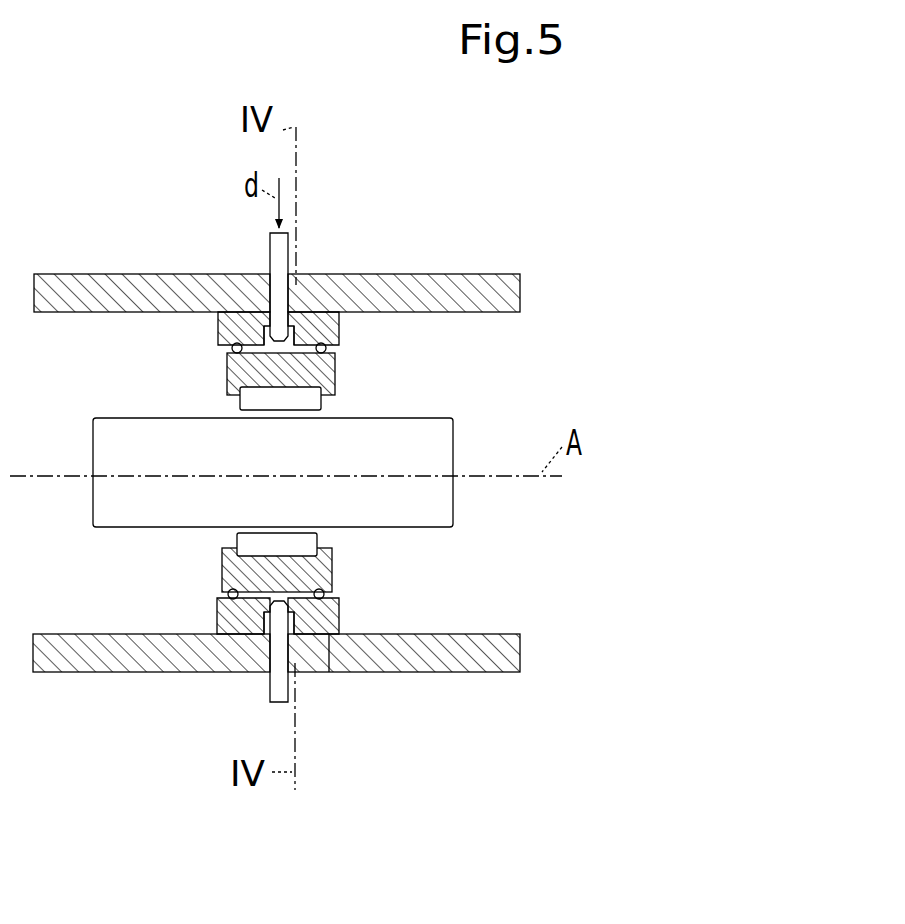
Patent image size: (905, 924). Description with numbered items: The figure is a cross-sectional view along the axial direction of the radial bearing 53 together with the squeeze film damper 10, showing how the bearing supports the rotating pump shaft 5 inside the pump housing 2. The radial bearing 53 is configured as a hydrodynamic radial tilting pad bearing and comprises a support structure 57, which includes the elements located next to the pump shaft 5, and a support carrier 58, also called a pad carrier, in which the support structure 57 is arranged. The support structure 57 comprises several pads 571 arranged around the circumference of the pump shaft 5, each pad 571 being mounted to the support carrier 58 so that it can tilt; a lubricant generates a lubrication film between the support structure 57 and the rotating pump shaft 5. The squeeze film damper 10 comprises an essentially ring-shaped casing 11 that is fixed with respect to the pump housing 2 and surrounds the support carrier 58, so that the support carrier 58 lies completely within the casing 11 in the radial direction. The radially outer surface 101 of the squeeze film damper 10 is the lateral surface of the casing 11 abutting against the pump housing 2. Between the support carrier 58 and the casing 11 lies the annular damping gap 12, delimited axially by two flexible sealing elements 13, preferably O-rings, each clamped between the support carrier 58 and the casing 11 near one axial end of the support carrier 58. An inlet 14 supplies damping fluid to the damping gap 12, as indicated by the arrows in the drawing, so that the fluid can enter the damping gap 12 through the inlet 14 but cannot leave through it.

The pump housing 2 is at (440, 270).
The pump shaft 5 is at (458, 500).
The squeeze film damper 10 is at (215, 344).
The casing 11 is at (341, 618).
The damping gap 12 is at (286, 332).
The sealing elements 13 is at (222, 597).
The inlet 14 is at (268, 263).
The radial bearing 53 is at (349, 366).
The support structure 57 is at (322, 540).
The pads 571 is at (320, 405).
The support carrier 58 is at (220, 563).
The radially outer surface 101 is at (329, 636).